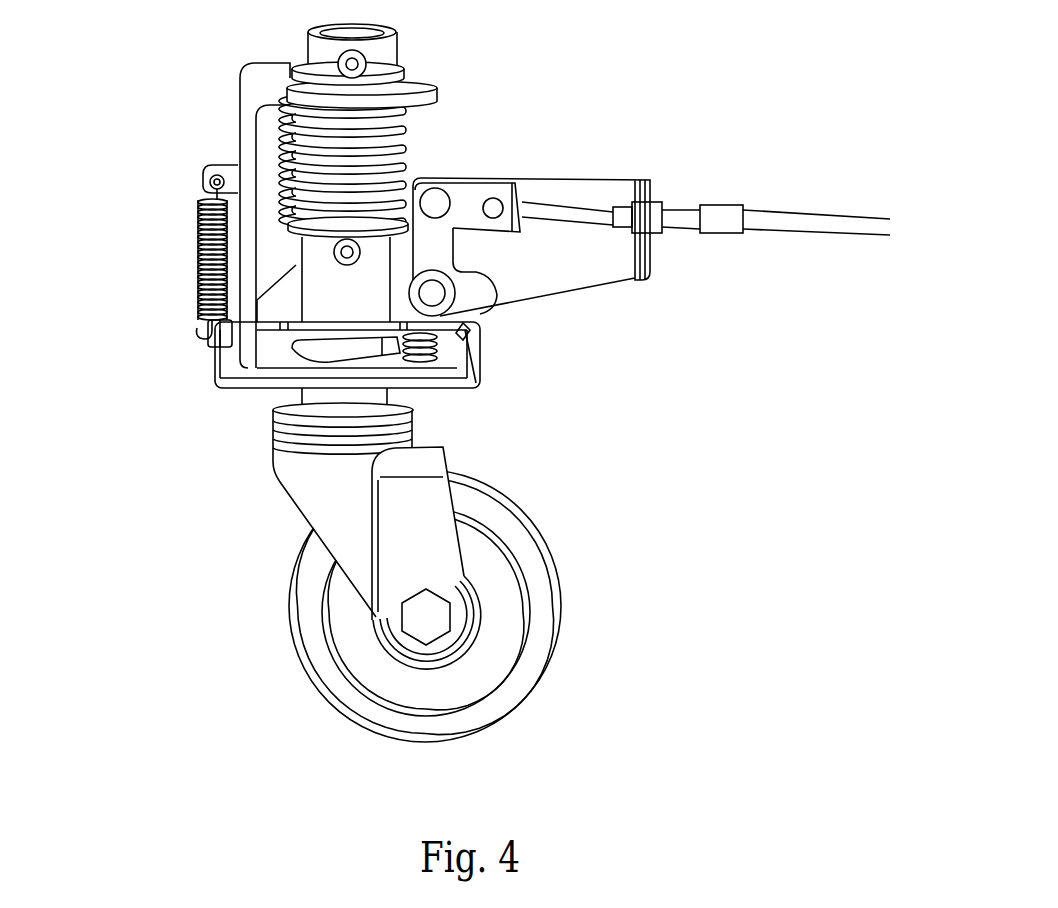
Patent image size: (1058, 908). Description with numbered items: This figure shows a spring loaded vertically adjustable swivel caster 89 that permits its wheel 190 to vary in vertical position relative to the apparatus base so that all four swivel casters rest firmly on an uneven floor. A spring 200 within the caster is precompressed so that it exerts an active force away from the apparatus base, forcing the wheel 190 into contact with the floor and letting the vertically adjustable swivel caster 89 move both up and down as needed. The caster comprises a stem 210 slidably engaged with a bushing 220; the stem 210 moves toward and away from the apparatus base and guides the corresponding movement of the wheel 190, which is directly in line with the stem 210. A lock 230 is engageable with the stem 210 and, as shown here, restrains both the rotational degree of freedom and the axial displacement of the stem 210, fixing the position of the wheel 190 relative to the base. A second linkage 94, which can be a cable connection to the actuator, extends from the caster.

The spring 200 is at (408, 137).
The second linkage 94 is at (795, 217).
The stem 210 is at (325, 292).
The lock 230 is at (337, 333).
The bushing 220 is at (363, 358).
The vertically adjustable swivel caster 89 is at (413, 452).
The wheel 190 is at (553, 578).